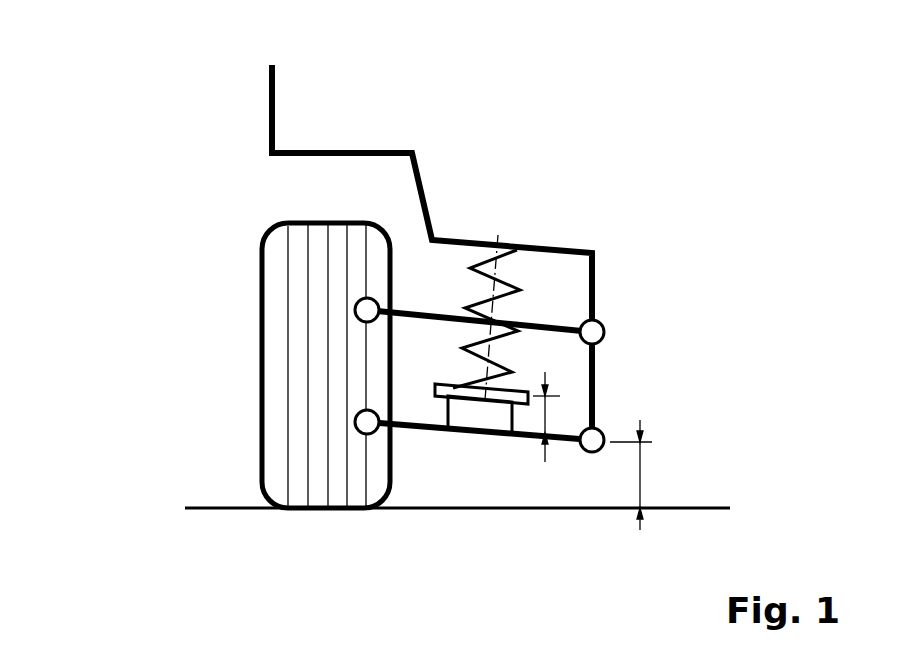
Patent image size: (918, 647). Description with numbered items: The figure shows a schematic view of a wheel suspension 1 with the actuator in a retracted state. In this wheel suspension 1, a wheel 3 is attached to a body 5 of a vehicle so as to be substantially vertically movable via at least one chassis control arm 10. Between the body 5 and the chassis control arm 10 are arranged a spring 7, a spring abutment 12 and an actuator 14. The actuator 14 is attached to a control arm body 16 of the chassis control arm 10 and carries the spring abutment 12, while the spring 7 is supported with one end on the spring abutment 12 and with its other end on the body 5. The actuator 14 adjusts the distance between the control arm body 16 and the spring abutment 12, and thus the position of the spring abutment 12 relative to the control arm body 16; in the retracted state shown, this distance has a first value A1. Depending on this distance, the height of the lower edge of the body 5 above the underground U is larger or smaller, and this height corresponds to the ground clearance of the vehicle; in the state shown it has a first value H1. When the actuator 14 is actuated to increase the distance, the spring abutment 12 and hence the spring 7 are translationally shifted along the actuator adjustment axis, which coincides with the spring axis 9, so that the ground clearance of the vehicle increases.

The wheel suspension 1 is at (158, 83).
The wheel 3 is at (262, 282).
The body 5 is at (594, 277).
The spring 7 is at (517, 283).
The spring axis 9 is at (489, 242).
The chassis control arm 10 is at (502, 452).
The spring abutment 12 is at (435, 388).
The actuator 14 is at (468, 422).
The control arm body 16 is at (412, 428).
The first value of distance A A1 is at (545, 410).
The first value of height H H1 is at (640, 478).
The underground U is at (662, 510).